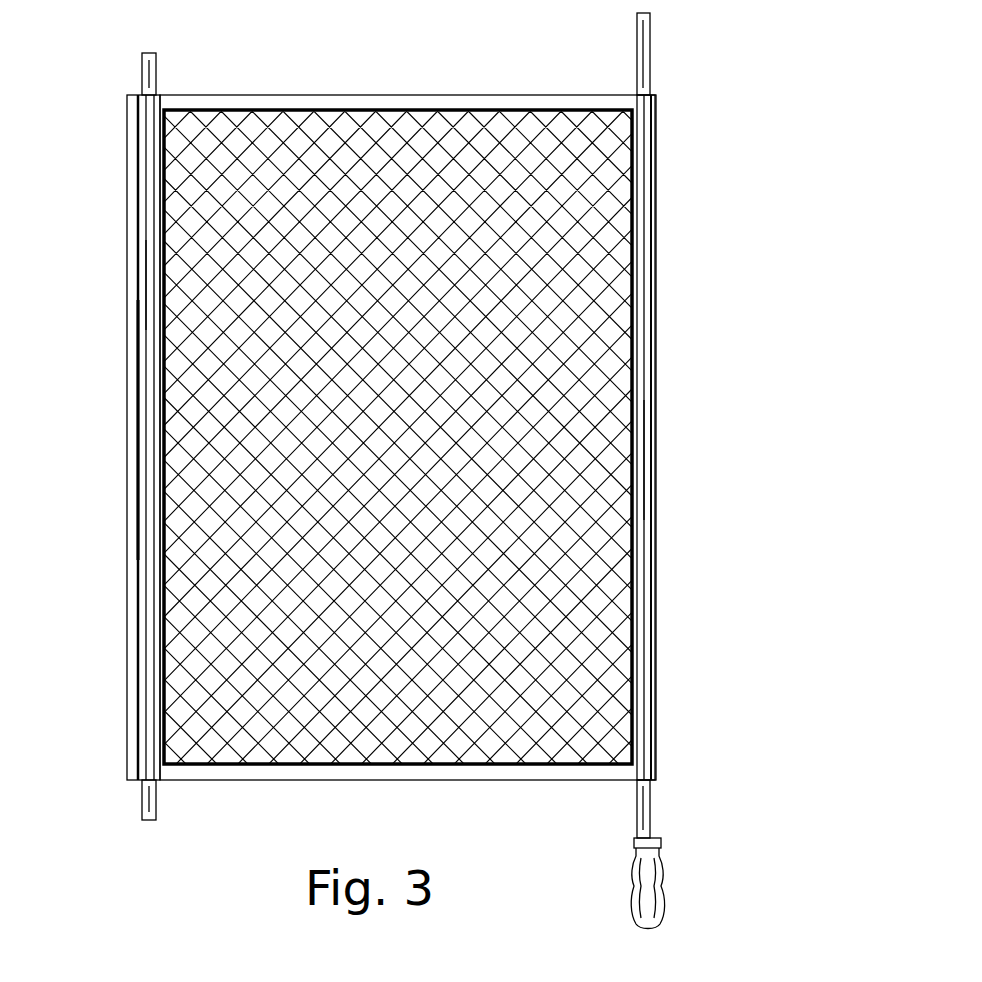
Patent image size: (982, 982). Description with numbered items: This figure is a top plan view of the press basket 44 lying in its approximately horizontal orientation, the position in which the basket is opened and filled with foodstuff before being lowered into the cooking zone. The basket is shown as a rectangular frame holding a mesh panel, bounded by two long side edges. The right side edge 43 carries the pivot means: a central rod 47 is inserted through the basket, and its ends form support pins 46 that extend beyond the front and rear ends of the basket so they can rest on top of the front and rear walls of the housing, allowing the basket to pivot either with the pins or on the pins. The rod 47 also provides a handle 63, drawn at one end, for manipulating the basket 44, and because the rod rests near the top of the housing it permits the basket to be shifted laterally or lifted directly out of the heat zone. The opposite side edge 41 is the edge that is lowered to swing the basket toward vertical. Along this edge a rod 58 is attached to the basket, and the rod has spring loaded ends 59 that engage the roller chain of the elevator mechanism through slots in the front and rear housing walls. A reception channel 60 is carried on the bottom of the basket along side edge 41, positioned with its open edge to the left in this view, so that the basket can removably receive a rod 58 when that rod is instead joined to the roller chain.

The press basket 44 is at (340, 50).
The side edge 41 is at (128, 580).
The right side edge 43 is at (657, 590).
The support pins 46 is at (650, 30).
The rod 47 is at (644, 462).
The rod 58 is at (146, 302).
The spring loaded ends 59 is at (142, 76).
The reception channel 60 is at (128, 426).
The handle 63 is at (662, 888).